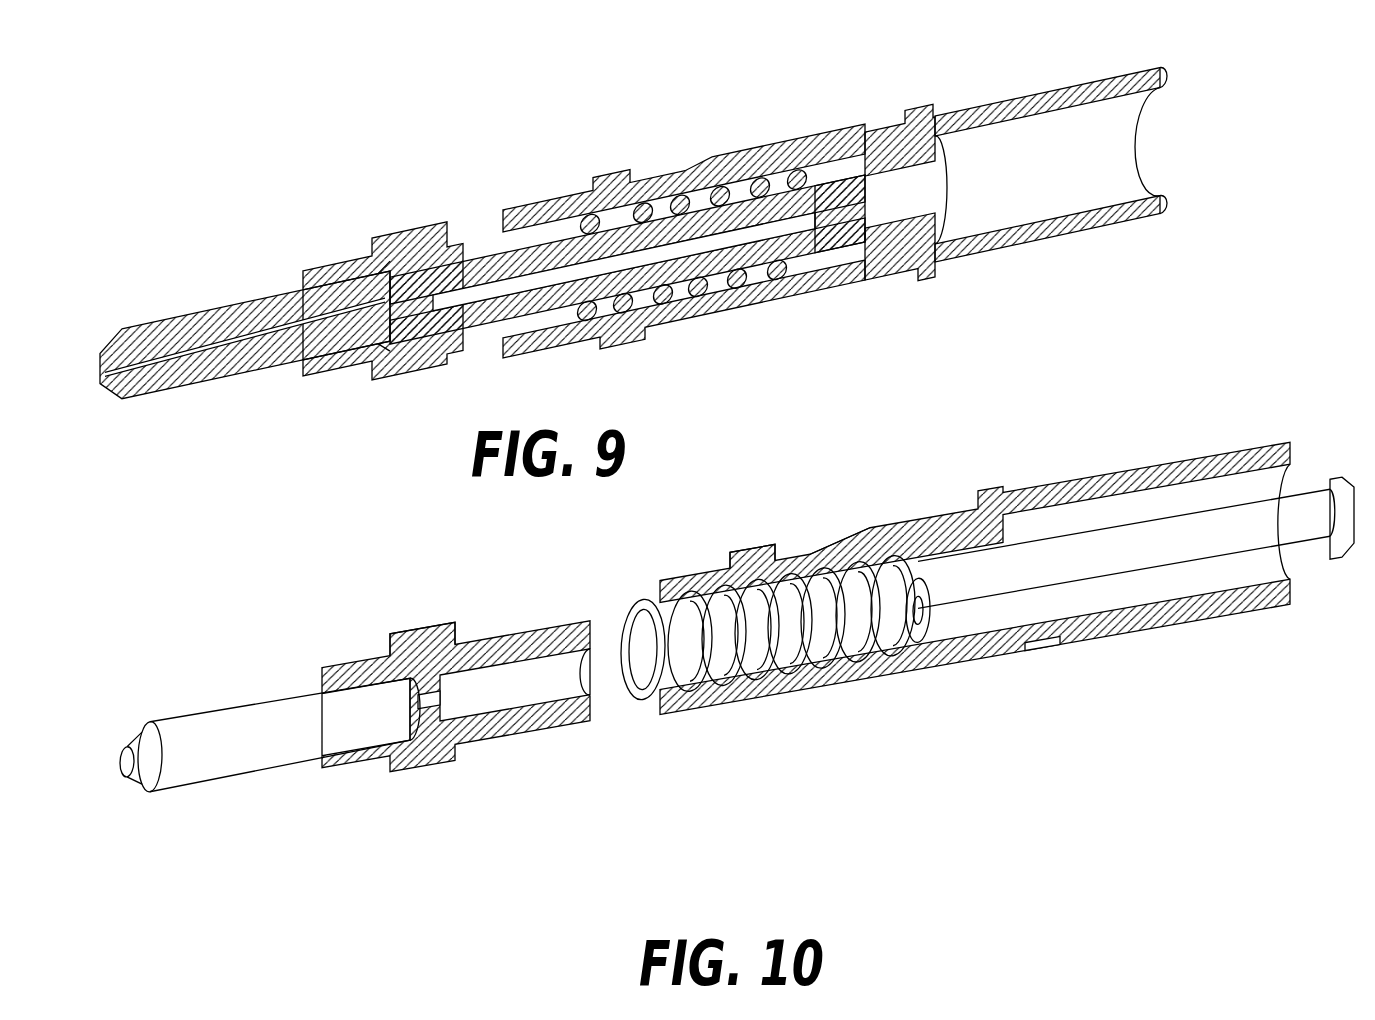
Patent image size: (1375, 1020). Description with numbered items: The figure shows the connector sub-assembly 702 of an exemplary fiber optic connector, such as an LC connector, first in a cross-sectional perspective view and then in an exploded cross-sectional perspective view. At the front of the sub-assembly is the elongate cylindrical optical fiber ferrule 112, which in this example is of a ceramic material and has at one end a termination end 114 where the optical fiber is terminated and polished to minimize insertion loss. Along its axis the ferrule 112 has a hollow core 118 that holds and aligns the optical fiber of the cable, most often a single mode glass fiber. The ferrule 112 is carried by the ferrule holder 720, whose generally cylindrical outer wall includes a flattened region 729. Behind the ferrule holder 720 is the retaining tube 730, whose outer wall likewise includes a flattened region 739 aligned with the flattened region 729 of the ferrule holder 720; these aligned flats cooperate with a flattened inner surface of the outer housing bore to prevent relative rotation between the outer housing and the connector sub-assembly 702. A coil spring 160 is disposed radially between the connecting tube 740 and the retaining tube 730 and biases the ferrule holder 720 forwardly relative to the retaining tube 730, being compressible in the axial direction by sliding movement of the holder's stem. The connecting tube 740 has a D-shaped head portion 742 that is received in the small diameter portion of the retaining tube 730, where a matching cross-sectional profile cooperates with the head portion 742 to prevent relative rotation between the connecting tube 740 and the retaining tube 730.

In FIG. 10, the optical fiber ferrule 112 is at (260, 755).
In FIG. 10, the termination end 114 is at (127, 786).
In FIG. 9, the hollow core 118 is at (232, 360).
In FIG. 10, the coil spring 160 is at (628, 705).
In FIG. 10, the connector sub-assembly 702 is at (885, 720).
In FIG. 9, the ferrule holder 720 is at (348, 272).
In FIG. 10, the ferrule holder 720 is at (485, 742).
In FIG. 10, the flattened region 729 is at (437, 632).
In FIG. 9, the retaining tube 730 is at (570, 210).
In FIG. 10, the flattened region 739 is at (760, 552).
In FIG. 9, the connecting tube 740 is at (485, 250).
In FIG. 10, the head portion 742 is at (1320, 472).